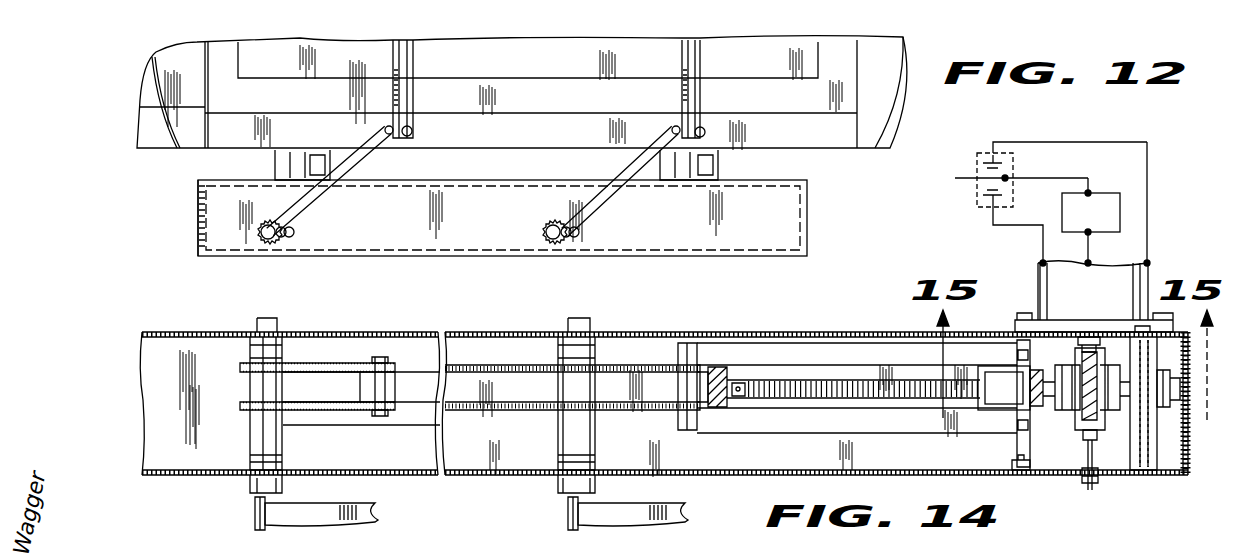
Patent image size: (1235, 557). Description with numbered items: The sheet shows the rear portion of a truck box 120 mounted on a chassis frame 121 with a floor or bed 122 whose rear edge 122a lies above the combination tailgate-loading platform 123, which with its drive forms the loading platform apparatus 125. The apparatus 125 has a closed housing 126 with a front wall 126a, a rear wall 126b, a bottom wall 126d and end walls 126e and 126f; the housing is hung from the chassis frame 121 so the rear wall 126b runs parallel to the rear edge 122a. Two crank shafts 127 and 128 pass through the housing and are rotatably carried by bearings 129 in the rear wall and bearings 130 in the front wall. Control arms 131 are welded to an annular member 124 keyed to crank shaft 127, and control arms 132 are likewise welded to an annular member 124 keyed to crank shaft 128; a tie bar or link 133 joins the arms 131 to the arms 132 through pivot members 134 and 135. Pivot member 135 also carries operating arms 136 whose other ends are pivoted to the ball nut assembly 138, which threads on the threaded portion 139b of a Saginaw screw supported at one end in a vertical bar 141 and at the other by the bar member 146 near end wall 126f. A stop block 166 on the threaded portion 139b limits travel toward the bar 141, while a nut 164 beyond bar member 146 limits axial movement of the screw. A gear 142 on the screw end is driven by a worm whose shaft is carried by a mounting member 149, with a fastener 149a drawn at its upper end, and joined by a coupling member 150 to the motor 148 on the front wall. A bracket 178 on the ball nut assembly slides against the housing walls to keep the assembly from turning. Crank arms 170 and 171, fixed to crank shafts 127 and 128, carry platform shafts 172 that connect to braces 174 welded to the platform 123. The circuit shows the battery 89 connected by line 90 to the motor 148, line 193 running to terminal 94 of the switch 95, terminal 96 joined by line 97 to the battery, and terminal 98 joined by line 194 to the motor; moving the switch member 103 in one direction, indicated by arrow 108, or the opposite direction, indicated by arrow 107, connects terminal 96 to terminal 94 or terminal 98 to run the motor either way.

In FIG. 12, the truck box 120 is at (135, 98).
In FIG. 12, the chassis frame 121 is at (275, 157).
In FIG. 12, the floor or bed 122 is at (612, 139).
In FIG. 12, the rear edge of truck bed 122a is at (838, 140).
In FIG. 12, the combination tailgate-loading platform 123 is at (612, 64).
In FIG. 14, the annular member 124 is at (285, 420).
In FIG. 12, the loading platform apparatus 125 is at (857, 205).
In FIG. 14, the loading platform apparatus 125 is at (478, 480).
In FIG. 12, the closed housing 126 is at (522, 222).
In FIG. 14, the front wall 126a is at (165, 332).
In FIG. 14, the rear wall 126b is at (150, 480).
In FIG. 14, the bottom wall 126d is at (140, 406).
In FIG. 12, the end wall 126e is at (196, 222).
In FIG. 14, the end wall 126f is at (1186, 472).
In FIG. 12, the crank shaft 127 is at (295, 232).
In FIG. 14, the crank shaft 127 is at (256, 500).
In FIG. 12, the crank shaft 128 is at (580, 232).
In FIG. 14, the crank shaft 128 is at (568, 497).
In FIG. 14, the bearing 129 is at (285, 487).
In FIG. 14, the bearing 130 is at (285, 345).
In FIG. 14, the control arms 131 is at (295, 376).
In FIG. 14, the control arms 132 is at (620, 363).
In FIG. 14, the tie bar or link 133 is at (466, 380).
In FIG. 14, the pivot member 134 is at (375, 416).
In FIG. 14, the pivot member 135 is at (692, 345).
In FIG. 14, the operating arms 136 is at (822, 347).
In FIG. 14, the ball nut assembly 138 is at (1000, 395).
In FIG. 14, the threaded portion of Saginaw screw 139b is at (870, 372).
In FIG. 14, the vertical bar 141 is at (737, 368).
In FIG. 14, the gear (combination gear and clutch pad) 142 is at (1085, 415).
In FIG. 14, the bar member 146 is at (1135, 462).
In FIG. 14, the motor 148 is at (1150, 270).
In FIG. 14, the mounting member 149 is at (1085, 462).
In FIG. 14, the worm shaft nut 149a is at (1092, 340).
In FIG. 14, the coupling member 150 is at (1058, 352).
In FIG. 14, the nut 164 is at (1182, 412).
In FIG. 14, the stop block 166 is at (740, 396).
In FIG. 12, the crank arm 170 is at (330, 200).
In FIG. 14, the crank arm 170 is at (365, 516).
In FIG. 12, the crank arm 171 is at (615, 197).
In FIG. 14, the crank arm 171 is at (675, 506).
In FIG. 12, the platform shaft 172 is at (414, 131).
In FIG. 12, the platform brace 174 is at (415, 62).
In FIG. 14, the bracket 178 is at (1028, 468).
In FIG. 14, the battery 89 is at (1110, 193).
In FIG. 14, the line 90 is at (1090, 248).
In FIG. 14, the terminal 94 is at (992, 152).
In FIG. 14, the manually operated switch 95 is at (1013, 190).
In FIG. 14, the second terminal 96 is at (1008, 176).
In FIG. 14, the line 97 is at (1075, 178).
In FIG. 14, the third terminal 98 is at (991, 203).
In FIG. 14, the movable switch member 103 is at (962, 176).
In FIG. 14, the direction arrow 107 is at (935, 198).
In FIG. 14, the direction arrow 108 is at (945, 142).
In FIG. 14, the line 193 is at (1148, 208).
In FIG. 14, the line 194 is at (1043, 242).